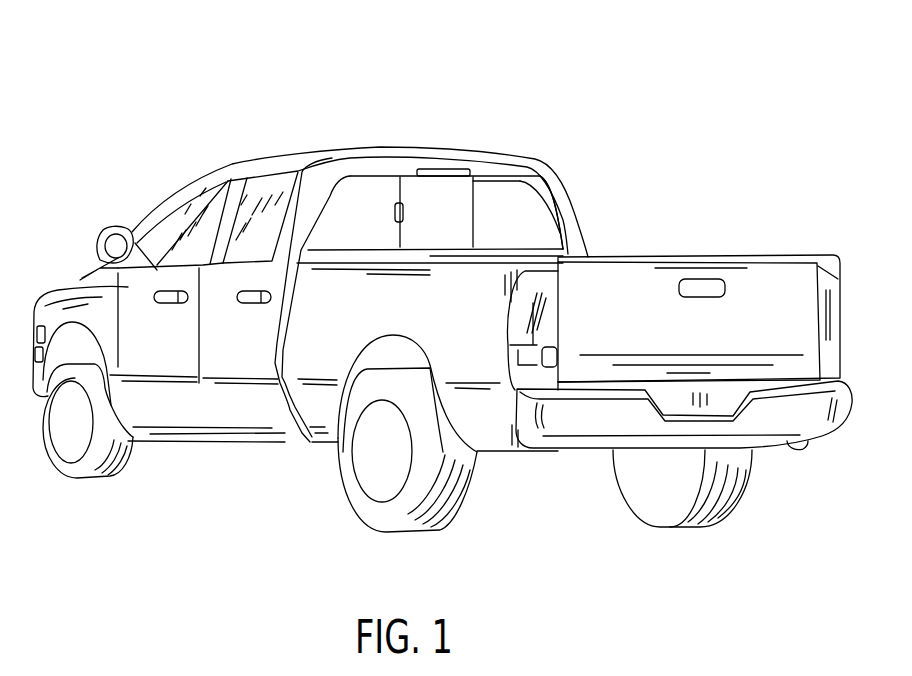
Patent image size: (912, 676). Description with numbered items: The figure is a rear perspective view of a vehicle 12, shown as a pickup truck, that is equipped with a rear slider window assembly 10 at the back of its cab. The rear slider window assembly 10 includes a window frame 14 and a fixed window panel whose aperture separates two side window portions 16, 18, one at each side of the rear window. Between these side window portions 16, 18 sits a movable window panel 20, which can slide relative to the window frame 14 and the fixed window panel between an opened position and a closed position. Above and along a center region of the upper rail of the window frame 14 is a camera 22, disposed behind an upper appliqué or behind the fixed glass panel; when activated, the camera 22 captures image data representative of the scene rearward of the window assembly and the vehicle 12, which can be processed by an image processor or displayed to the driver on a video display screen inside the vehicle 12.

The rear slider window assembly 10 is at (512, 212).
The vehicle 12 is at (264, 104).
The window frame 14 is at (353, 248).
The side window portion 16 is at (377, 187).
The side window portion 18 is at (538, 220).
The movable window panel 20 is at (467, 193).
The camera 22 is at (430, 168).